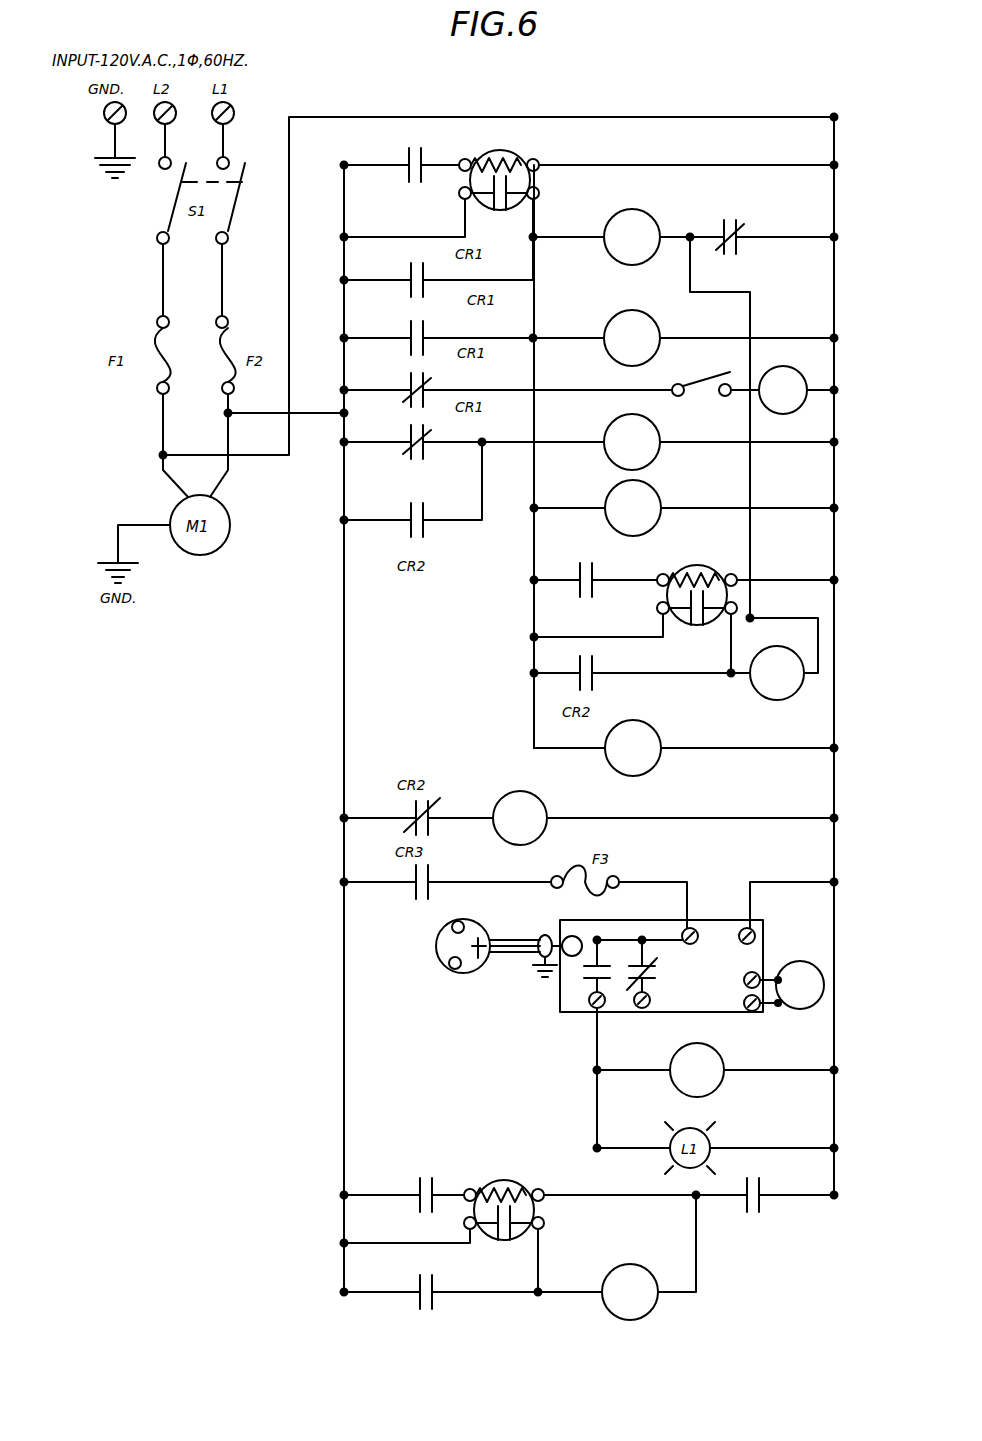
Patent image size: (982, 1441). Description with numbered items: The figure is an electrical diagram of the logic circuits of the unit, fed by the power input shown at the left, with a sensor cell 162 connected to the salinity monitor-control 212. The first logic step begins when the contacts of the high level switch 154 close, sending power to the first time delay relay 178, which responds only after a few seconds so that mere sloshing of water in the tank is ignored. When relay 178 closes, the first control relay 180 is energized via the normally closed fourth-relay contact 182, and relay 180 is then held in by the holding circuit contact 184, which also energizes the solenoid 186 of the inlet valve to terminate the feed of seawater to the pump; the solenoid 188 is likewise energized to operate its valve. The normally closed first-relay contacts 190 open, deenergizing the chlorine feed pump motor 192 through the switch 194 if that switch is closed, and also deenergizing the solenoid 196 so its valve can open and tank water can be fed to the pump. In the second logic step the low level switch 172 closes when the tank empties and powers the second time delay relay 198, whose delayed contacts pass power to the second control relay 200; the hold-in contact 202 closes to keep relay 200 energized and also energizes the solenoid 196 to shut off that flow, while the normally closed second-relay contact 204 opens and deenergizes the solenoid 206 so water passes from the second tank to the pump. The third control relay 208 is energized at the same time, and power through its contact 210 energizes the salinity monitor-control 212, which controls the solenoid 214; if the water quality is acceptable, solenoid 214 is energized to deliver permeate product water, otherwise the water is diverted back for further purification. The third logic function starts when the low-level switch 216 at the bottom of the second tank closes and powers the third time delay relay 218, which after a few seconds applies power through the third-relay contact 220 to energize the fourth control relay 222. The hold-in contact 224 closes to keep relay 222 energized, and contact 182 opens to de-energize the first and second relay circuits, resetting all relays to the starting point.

The high level switch LS1 154 is at (405, 160).
The sensor cell 162 is at (440, 962).
The low level switch 172 is at (577, 588).
The time delay relay TDR1 178 is at (520, 157).
The control relay CR1 180 is at (630, 212).
The contact CR4 182 is at (744, 248).
The holding circuit contact CR1 184 is at (408, 327).
The solenoid 186 is at (630, 312).
The solenoid 188 is at (655, 494).
The contact CR1 190 is at (407, 446).
The chlorine feed pump motor M2 192 is at (800, 378).
The switch SW2 194 is at (688, 383).
The solenoid 196 is at (625, 422).
The time delay relay TDR2 198 is at (728, 570).
The control relay CR2 200 is at (772, 698).
The contact CR2 202 is at (410, 516).
The contact CR2 204 is at (440, 798).
The solenoid 206 is at (540, 806).
The control relay CR3 208 is at (660, 765).
The contact CR3 210 is at (408, 898).
The salinity monitor-control 212 is at (712, 928).
The solenoid 214 is at (710, 1088).
The low-level switch LS3 216 is at (415, 1188).
The time delay relay TDR3 218 is at (536, 1207).
The contact CR3 220 is at (770, 1200).
The control relay CR4 222 is at (650, 1304).
The contact CR4 224 is at (437, 1303).